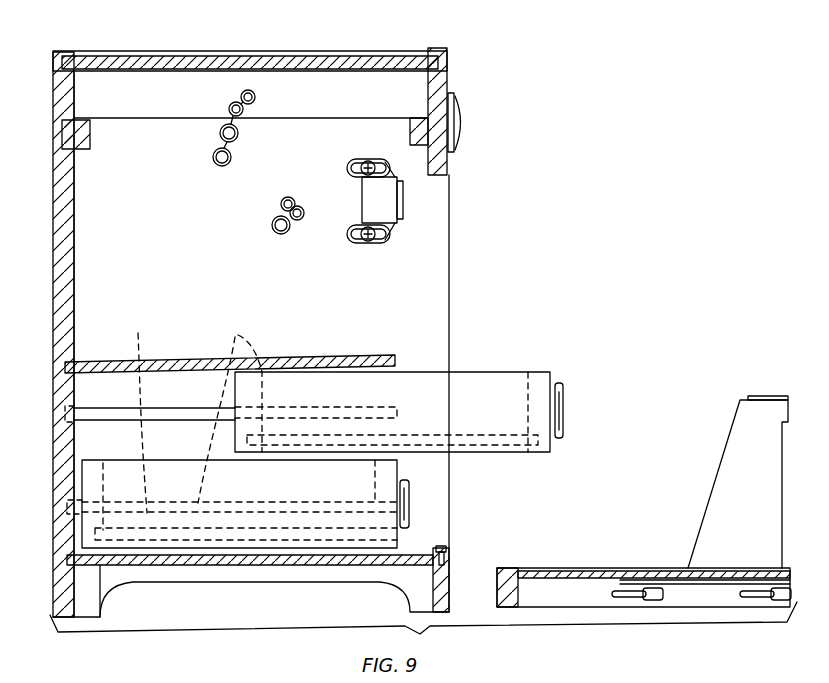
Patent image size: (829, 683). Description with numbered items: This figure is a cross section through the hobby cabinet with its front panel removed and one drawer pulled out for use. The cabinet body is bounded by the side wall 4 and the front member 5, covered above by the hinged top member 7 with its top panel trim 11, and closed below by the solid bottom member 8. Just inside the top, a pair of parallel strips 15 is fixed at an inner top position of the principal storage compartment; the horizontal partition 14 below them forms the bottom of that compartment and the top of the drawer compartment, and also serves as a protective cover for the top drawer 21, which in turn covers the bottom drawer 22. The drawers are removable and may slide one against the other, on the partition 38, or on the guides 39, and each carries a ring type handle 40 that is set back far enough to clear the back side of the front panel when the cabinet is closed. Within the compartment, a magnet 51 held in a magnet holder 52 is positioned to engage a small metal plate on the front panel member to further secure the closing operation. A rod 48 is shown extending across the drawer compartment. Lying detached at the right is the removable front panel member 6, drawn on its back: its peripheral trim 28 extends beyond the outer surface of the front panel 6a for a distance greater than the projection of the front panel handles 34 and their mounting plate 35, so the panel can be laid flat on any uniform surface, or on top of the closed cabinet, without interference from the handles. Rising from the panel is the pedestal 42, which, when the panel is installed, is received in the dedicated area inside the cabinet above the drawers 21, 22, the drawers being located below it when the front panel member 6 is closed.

The side wall 4 is at (432, 293).
The front member 5 is at (447, 158).
The front panel member 6 is at (582, 610).
The front panel 6a is at (590, 572).
The top member 7 is at (277, 50).
The bottom member 8 is at (236, 582).
The top panel trim 11 is at (446, 72).
The horizontal partition 14 is at (338, 356).
The parallel strips 15 is at (88, 128).
The top drawer 21 is at (545, 383).
The bottom drawer 22 is at (415, 540).
The peripheral trim 28 is at (505, 570).
The front panel handles 34 is at (652, 600).
The mounting plate 35 is at (700, 580).
The partition 38 is at (157, 562).
The guides 39 is at (237, 411).
The ring type handles 40 is at (563, 390).
The pedestal 42 is at (730, 473).
The rod 48 is at (107, 412).
The magnet 51 is at (358, 159).
The magnet holder 52 is at (388, 222).